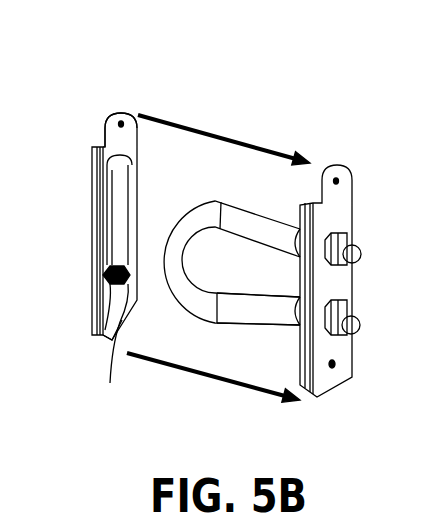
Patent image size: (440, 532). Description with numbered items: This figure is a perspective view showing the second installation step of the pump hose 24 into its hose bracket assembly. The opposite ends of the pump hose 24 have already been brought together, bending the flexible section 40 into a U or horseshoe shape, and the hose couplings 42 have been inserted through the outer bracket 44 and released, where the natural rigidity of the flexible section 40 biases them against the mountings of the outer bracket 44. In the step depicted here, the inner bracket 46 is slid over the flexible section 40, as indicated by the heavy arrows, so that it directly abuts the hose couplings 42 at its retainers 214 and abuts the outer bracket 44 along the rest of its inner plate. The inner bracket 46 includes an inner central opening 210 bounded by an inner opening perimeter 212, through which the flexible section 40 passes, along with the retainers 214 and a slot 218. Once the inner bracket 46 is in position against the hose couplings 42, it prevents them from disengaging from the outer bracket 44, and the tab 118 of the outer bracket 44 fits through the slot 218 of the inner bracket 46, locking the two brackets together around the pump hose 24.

The pump hose 24 is at (205, 196).
The flexible section 40 is at (252, 307).
The hose couplings 42 is at (349, 308).
The outer bracket 44 is at (338, 204).
The inner bracket 46 is at (113, 140).
The tab 118 is at (333, 370).
The inner central opening 210 is at (122, 272).
The inner opening perimeter 212 is at (133, 125).
The retainers 214 is at (122, 175).
The slot 218 is at (122, 320).